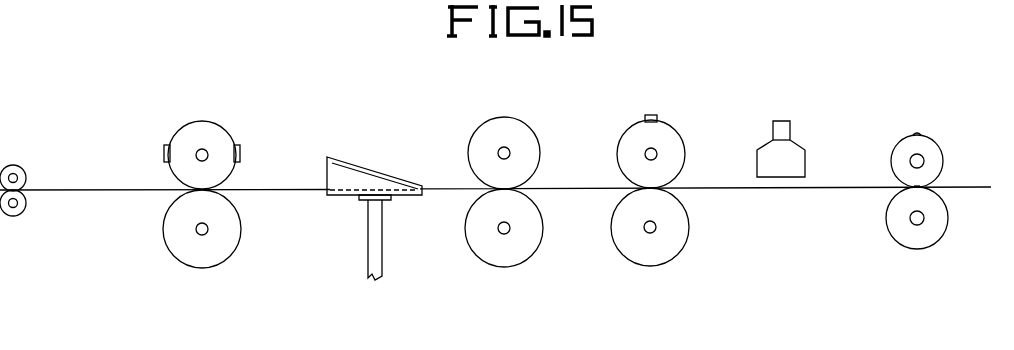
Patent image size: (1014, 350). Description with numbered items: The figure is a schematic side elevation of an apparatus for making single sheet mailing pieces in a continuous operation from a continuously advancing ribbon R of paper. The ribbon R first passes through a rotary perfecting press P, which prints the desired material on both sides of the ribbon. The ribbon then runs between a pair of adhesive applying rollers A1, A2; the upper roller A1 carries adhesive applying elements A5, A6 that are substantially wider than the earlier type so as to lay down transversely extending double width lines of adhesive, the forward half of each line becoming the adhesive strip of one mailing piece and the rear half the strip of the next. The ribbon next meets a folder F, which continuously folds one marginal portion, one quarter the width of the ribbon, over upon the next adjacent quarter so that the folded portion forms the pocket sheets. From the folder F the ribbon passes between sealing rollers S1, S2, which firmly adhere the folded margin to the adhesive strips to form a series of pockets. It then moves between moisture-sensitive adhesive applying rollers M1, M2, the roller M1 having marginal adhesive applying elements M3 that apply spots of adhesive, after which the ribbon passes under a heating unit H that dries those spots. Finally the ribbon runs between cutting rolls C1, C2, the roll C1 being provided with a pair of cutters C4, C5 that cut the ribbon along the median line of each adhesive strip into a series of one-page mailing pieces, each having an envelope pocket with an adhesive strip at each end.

The rotary perfecting press P is at (9, 166).
The ribbon R is at (67, 190).
The adhesive applying roller A1 is at (222, 123).
The adhesive applying roller A2 is at (241, 225).
The adhesive applying element A5 is at (242, 148).
The adhesive applying element A6 is at (164, 153).
The folder F is at (349, 162).
The sealing roller S1 is at (520, 120).
The sealing roller S2 is at (533, 255).
The moisture-sensitive adhesive applying roller M1 is at (677, 139).
The moisture-sensitive adhesive applying roller M2 is at (689, 242).
The marginal adhesive applying element M3 is at (655, 115).
The heating unit H is at (794, 142).
The cutting roll C1 is at (935, 146).
The cutting roll C2 is at (948, 230).
The cutter C4 is at (921, 186).
The cutter C5 is at (918, 134).